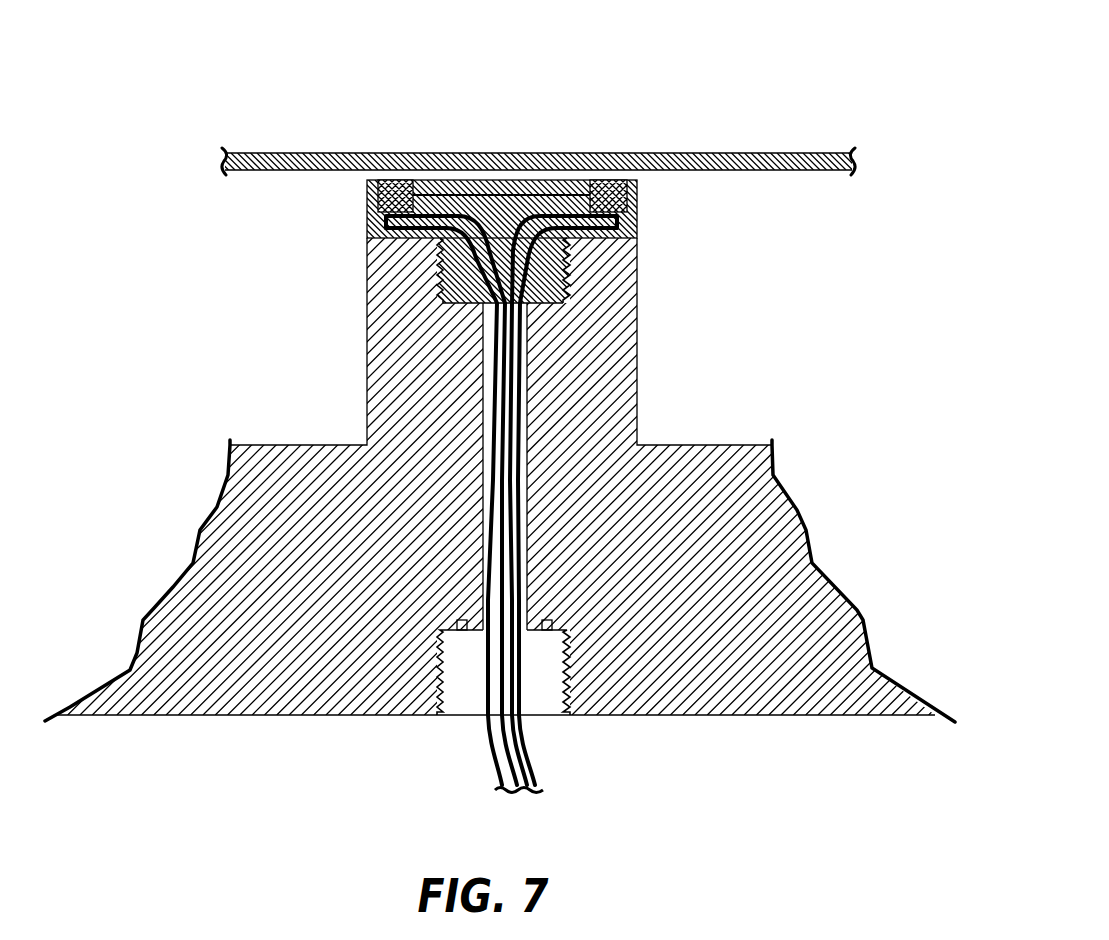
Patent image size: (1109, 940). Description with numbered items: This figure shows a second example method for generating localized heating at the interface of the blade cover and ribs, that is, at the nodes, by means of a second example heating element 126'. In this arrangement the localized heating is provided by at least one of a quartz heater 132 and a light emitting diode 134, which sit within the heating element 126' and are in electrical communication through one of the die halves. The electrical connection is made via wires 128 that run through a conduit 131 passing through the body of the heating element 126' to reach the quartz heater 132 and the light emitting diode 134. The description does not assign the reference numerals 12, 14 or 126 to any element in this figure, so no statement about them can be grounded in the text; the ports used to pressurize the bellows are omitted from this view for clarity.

The panel 12 is at (536, 100).
The wall member 14 is at (536, 100).
The second example heating element 126' is at (530, 216).
The mounting block 126 is at (530, 216).
The light emitting diode 134 is at (399, 180).
The quartz heater 132 is at (609, 180).
The wires 128 is at (523, 693).
The conduit 131 is at (483, 628).